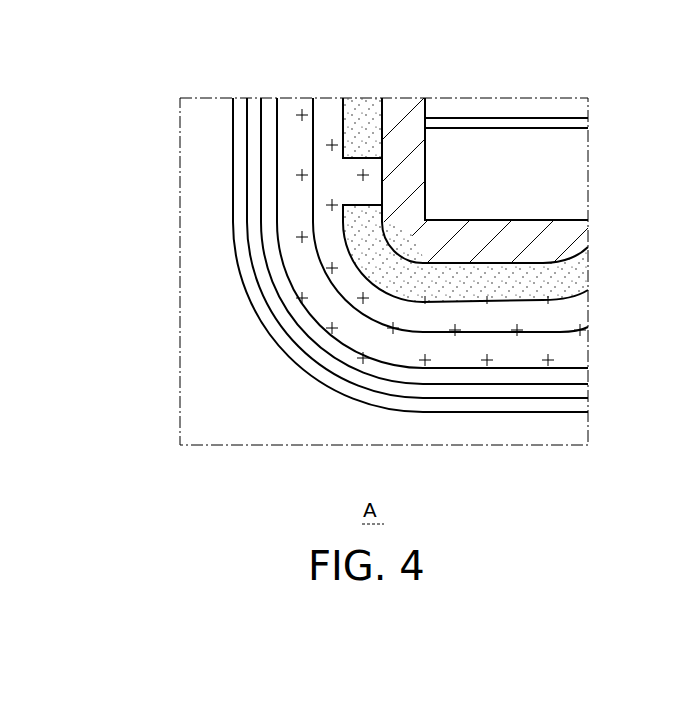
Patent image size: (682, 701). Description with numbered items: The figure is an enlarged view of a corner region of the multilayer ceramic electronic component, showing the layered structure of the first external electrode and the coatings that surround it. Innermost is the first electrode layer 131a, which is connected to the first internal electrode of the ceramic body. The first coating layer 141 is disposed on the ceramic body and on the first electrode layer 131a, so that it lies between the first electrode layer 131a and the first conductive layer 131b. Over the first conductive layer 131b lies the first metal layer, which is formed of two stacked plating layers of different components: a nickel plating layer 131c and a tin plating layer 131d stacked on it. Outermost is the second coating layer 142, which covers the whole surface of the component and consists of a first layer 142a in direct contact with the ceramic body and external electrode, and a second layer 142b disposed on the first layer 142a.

The first electrode layer 131a is at (403, 112).
The first conductive layer 131b is at (323, 135).
The nickel plating layer 131c is at (285, 172).
The tin plating layer 131d is at (265, 208).
The first coating layer 141 is at (363, 233).
The second coating layer 142 is at (310, 255).
The first layer 142a is at (278, 310).
The second layer 142b is at (307, 363).